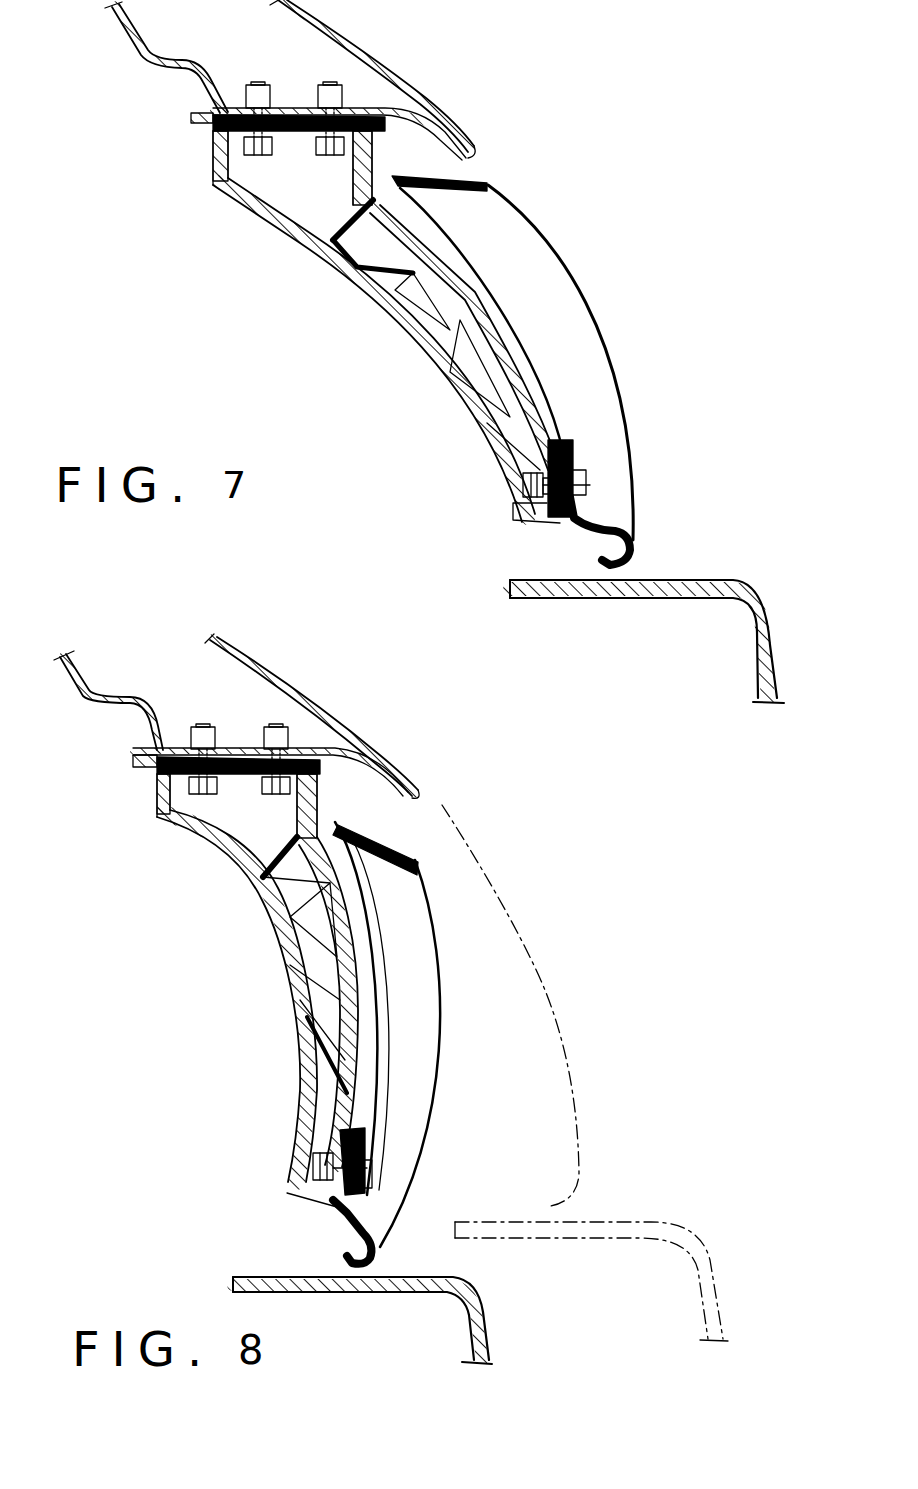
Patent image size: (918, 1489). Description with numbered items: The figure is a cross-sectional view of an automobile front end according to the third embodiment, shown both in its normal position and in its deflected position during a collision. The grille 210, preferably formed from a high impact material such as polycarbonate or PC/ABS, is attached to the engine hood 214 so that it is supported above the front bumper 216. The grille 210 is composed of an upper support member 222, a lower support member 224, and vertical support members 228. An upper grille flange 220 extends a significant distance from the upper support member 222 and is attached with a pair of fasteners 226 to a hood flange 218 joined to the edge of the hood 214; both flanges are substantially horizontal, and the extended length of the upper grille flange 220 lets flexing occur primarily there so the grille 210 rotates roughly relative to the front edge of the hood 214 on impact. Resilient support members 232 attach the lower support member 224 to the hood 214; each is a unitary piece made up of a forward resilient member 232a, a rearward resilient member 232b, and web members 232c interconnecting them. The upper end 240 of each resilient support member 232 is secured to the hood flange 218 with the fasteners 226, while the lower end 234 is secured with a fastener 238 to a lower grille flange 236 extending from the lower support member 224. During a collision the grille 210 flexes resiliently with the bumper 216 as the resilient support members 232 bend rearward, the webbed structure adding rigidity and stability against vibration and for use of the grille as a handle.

In FIG. 7, the grille 210 is at (630, 381).
In FIG. 8, the grille 210 is at (455, 987).
In FIG. 7, the engine hood 214 is at (372, 44).
In FIG. 8, the engine hood 214 is at (345, 712).
In FIG. 7, the front bumper 216 is at (762, 622).
In FIG. 8, the front bumper 216 is at (479, 1332).
In FIG. 7, the hood flange 218 is at (228, 107).
In FIG. 8, the hood flange 218 is at (163, 748).
In FIG. 7, the upper grille flange 220 is at (190, 117).
In FIG. 8, the upper grille flange 220 is at (140, 763).
In FIG. 7, the upper support member 222 is at (480, 181).
In FIG. 8, the upper support member 222 is at (418, 860).
In FIG. 7, the lower support member 224 is at (630, 548).
In FIG. 8, the lower support member 224 is at (377, 1248).
In FIG. 7, the fasteners 226 is at (317, 100).
In FIG. 8, the fasteners 226 is at (260, 740).
In FIG. 7, the vertical support members 228 is at (553, 295).
In FIG. 8, the vertical support members 228 is at (445, 1035).
In FIG. 7, the resilient support members 232 is at (358, 319).
In FIG. 8, the resilient support members 232 is at (234, 982).
In FIG. 7, the forward resilient member 232a is at (443, 290).
In FIG. 8, the forward resilient member 232a is at (327, 885).
In FIG. 7, the rearward resilient member 232b is at (445, 382).
In FIG. 8, the rearward resilient member 232b is at (290, 965).
In FIG. 7, the web members 232c is at (350, 232).
In FIG. 8, the web members 232c is at (323, 1073).
In FIG. 7, the lower end 234 is at (562, 512).
In FIG. 8, the lower end 234 is at (333, 1200).
In FIG. 7, the lower grille flange 236 is at (577, 503).
In FIG. 8, the lower grille flange 236 is at (367, 1150).
In FIG. 7, the fastener 238 is at (520, 487).
In FIG. 8, the fastener 238 is at (320, 1160).
In FIG. 7, the upper end 240 is at (295, 133).
In FIG. 8, the upper end 240 is at (240, 774).